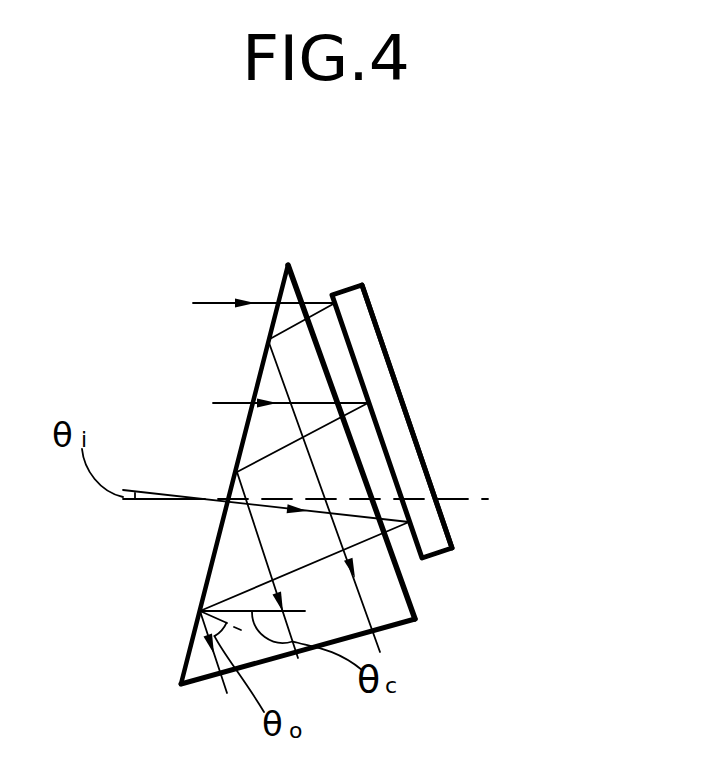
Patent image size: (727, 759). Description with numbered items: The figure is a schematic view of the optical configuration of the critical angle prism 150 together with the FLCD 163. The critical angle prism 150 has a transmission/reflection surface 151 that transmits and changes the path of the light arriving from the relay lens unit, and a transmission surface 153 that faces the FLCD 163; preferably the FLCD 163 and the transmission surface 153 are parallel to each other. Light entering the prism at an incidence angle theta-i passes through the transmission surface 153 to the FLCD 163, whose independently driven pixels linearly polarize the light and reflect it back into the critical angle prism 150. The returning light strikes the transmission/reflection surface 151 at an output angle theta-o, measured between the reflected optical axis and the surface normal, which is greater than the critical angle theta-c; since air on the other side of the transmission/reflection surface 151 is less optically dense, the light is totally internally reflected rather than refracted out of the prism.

The critical angle prism 150 is at (413, 285).
The transmission/reflection surface 151 is at (188, 645).
The transmission surface 153 is at (413, 599).
The FLCD 163 is at (446, 520).